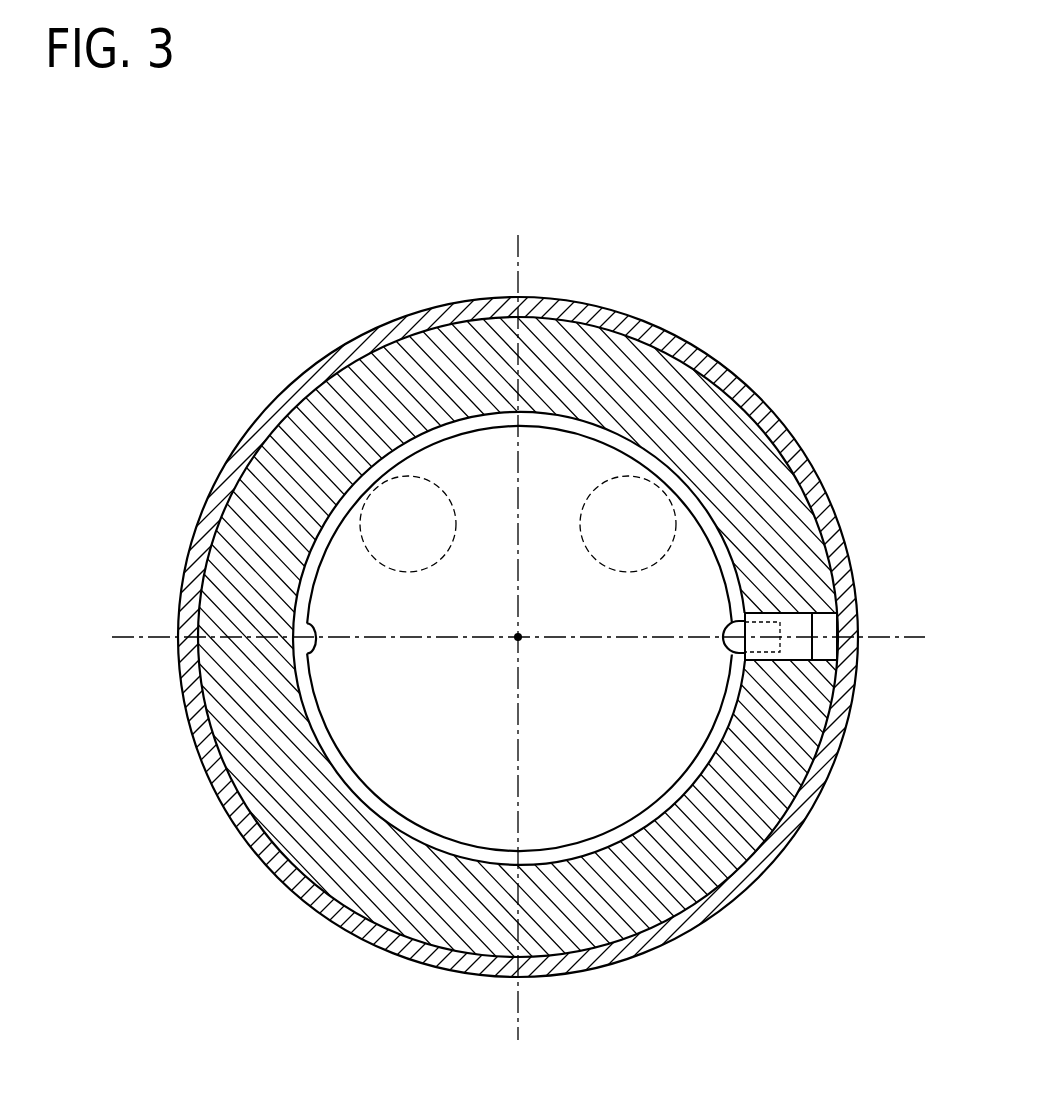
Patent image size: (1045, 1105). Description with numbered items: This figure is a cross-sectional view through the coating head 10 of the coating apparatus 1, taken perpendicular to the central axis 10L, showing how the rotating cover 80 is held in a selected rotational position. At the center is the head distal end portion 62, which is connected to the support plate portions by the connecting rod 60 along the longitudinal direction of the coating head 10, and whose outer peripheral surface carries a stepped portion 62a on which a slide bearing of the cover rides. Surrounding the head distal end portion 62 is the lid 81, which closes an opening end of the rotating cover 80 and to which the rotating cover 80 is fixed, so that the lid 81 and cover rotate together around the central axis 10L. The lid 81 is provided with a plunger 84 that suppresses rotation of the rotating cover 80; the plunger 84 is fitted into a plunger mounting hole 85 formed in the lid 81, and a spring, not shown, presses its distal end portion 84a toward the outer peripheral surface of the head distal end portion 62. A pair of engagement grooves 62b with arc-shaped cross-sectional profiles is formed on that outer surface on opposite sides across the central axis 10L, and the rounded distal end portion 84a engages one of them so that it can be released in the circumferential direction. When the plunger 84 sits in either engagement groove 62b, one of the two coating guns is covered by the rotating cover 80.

The rotary apparatus 1 is at (236, 226).
The coating head 10 is at (662, 302).
The central axis 10L is at (523, 641).
The connecting rod 60 is at (430, 569).
The head distal end portion 62 is at (481, 440).
The stepped portion 62a is at (567, 428).
The engagement groove 62b is at (300, 634).
The rotating cover 80 is at (402, 322).
The lid 81 is at (382, 378).
The plunger 84 is at (812, 632).
The distal end portion 84a is at (730, 654).
The plunger mounting hole 85 is at (790, 647).